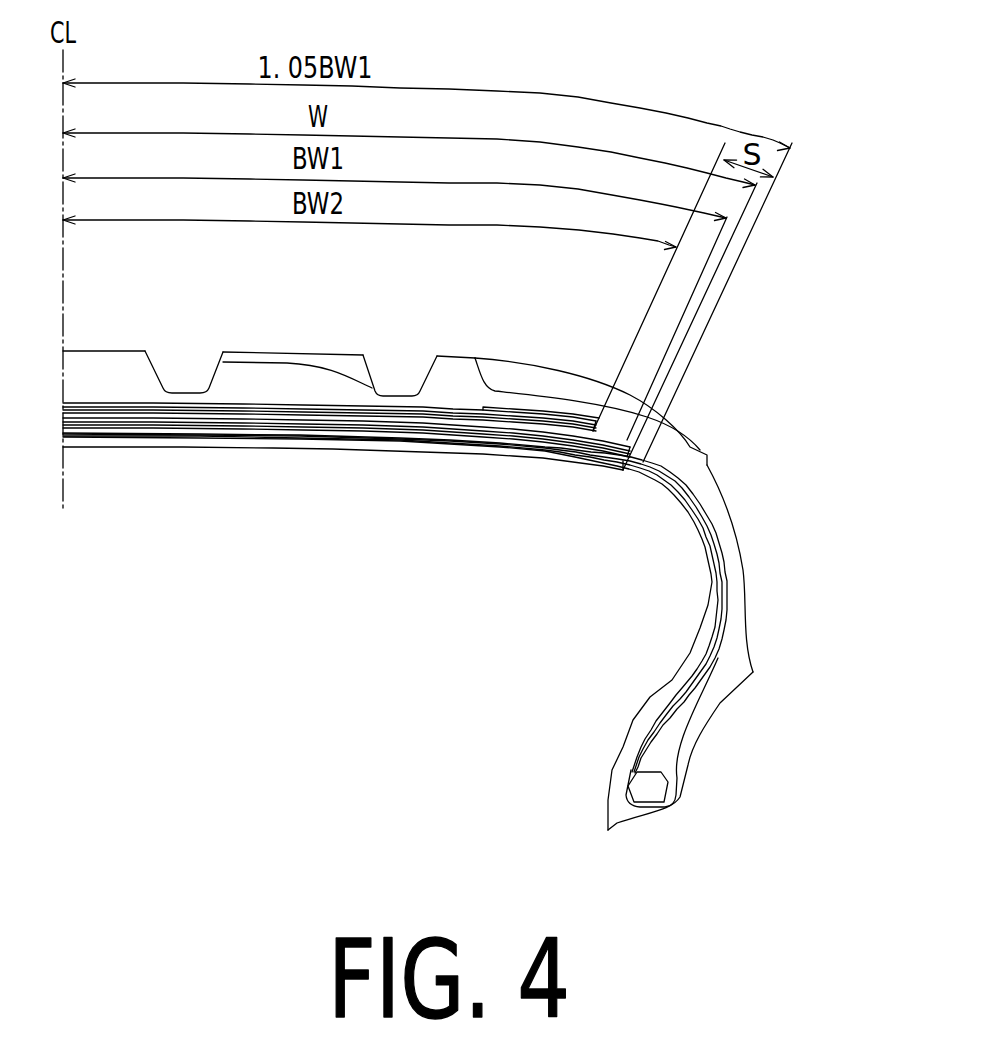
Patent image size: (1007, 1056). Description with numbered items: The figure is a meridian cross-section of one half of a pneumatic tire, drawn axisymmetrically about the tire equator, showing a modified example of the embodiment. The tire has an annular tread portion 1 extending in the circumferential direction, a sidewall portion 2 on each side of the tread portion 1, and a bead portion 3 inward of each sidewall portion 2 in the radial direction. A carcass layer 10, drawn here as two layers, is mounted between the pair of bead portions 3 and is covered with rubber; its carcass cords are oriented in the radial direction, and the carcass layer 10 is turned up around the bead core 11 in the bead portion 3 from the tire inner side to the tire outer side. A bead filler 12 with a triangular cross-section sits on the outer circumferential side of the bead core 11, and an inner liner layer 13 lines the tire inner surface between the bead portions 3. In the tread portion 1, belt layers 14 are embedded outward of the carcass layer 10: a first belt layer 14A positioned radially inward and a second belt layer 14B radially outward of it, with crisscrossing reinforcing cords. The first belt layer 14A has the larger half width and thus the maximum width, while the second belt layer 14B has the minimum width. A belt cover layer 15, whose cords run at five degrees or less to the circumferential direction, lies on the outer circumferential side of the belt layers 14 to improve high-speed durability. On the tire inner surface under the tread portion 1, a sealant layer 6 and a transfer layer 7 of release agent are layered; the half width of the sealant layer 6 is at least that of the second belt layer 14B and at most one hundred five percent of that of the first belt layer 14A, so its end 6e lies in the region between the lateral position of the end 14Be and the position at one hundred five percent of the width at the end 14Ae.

The tread portion 1 is at (133, 348).
The sidewall portions 2 is at (747, 548).
The bead portions 3 is at (699, 755).
The sealant layer 6 is at (245, 449).
The end of the sealant layer 6e is at (630, 473).
The transfer layer of a release agent 7 is at (113, 437).
The carcass layer 10 is at (700, 502).
The bead core 11 is at (647, 785).
The bead filler 12 is at (665, 733).
The inner liner layer 13 is at (733, 603).
The belt layers 14 is at (346, 368).
The first belt layer 14A is at (397, 407).
The second belt layer 14B is at (293, 417).
The end of the first belt layer 14Ae is at (602, 460).
The end of the second belt layer 14Be is at (582, 445).
The belt cover layer 15 is at (565, 412).